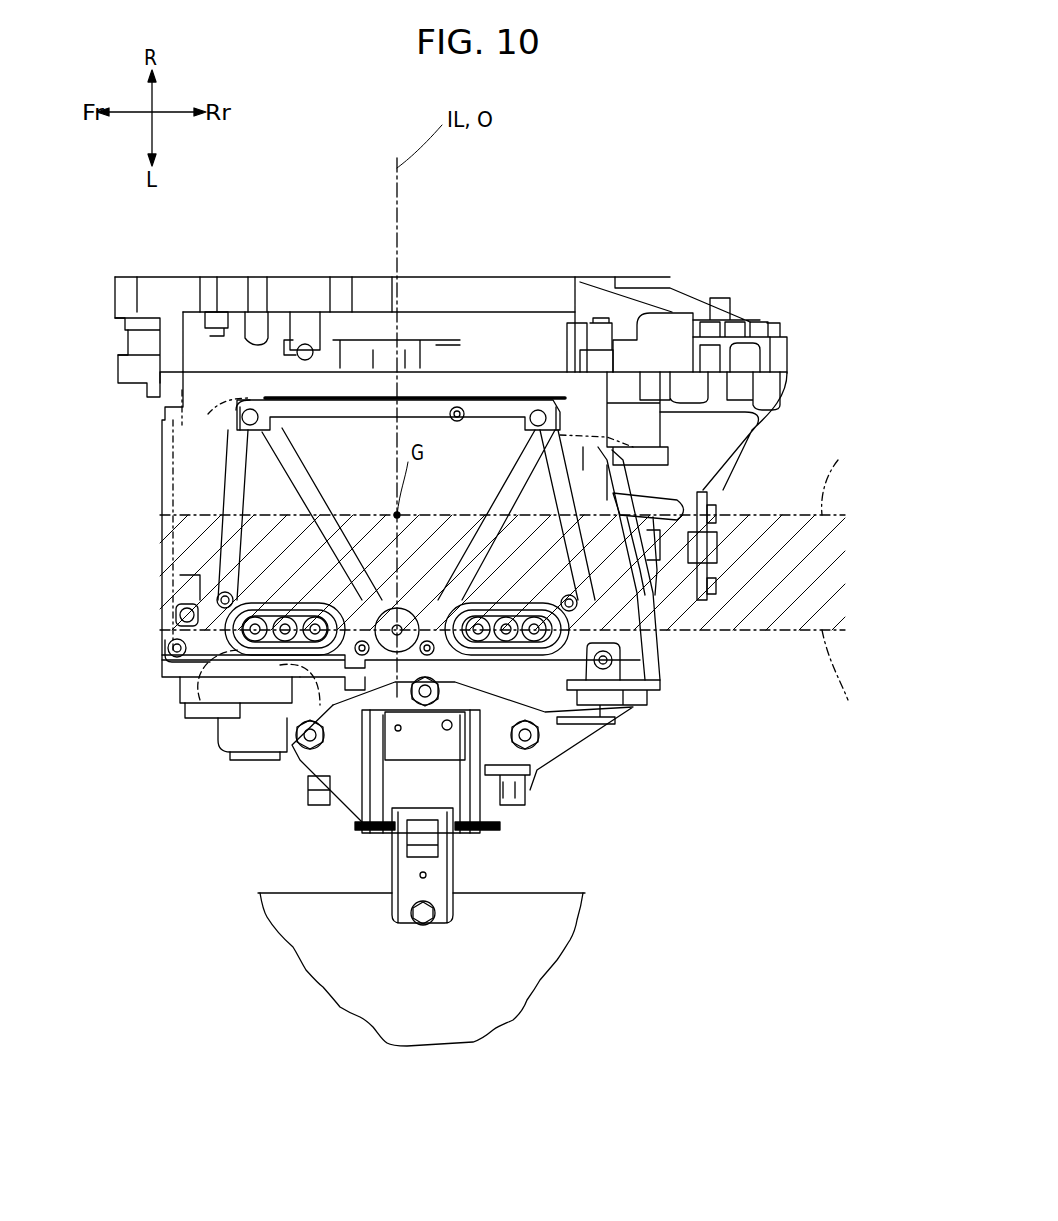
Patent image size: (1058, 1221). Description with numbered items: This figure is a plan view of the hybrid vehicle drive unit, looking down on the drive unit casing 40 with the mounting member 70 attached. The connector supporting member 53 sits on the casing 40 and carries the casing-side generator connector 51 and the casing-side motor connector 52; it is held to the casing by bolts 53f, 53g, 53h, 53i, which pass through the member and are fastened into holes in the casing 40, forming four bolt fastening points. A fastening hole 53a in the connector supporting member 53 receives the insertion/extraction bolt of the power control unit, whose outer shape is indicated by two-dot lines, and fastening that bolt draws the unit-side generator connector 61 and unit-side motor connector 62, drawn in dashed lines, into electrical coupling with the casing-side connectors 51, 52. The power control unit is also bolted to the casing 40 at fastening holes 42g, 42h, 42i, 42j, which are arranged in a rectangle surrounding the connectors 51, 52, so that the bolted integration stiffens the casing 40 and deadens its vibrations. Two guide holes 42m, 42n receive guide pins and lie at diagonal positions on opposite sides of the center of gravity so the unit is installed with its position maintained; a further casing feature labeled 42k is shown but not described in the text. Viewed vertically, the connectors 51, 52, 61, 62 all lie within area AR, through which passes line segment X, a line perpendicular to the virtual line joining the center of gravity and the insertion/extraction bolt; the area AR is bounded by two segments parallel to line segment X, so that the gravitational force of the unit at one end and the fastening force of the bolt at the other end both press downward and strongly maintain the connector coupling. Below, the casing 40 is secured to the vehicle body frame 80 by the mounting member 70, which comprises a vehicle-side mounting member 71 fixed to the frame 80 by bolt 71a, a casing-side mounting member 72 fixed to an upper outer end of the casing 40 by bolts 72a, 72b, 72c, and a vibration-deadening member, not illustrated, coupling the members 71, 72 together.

The drive unit casing 40 is at (782, 330).
The fastening hole 42g is at (177, 650).
The fastening hole 42h is at (615, 680).
The fastening hole 42i is at (210, 410).
The fastening hole 42j is at (537, 396).
The case rib 42k is at (284, 393).
The guide hole 42m is at (180, 607).
The guide hole 42n is at (460, 402).
The casing-side generator connector 51 is at (240, 572).
The casing-side motor connector 52 is at (710, 508).
The connector supporting member 53 is at (358, 396).
The fastening hole 53a is at (440, 398).
The bolt 53f is at (232, 714).
The bolt 53g is at (615, 702).
The bolt 53h is at (236, 602).
The bolt 53i is at (712, 549).
The unit-side generator connector 61 is at (185, 691).
The unit-side motor connector 62 is at (575, 644).
The mounting member 70 is at (500, 810).
The vehicle-side mounting member 71 is at (458, 881).
The bolt 71a is at (424, 926).
The casing-side mounting member 72 is at (296, 775).
The bolt 72a is at (530, 790).
The bolt 72b is at (302, 742).
The bolt 72c is at (533, 740).
The vehicle body frame 80 is at (510, 970).
The area AR is at (845, 515).
The line segment X is at (760, 580).